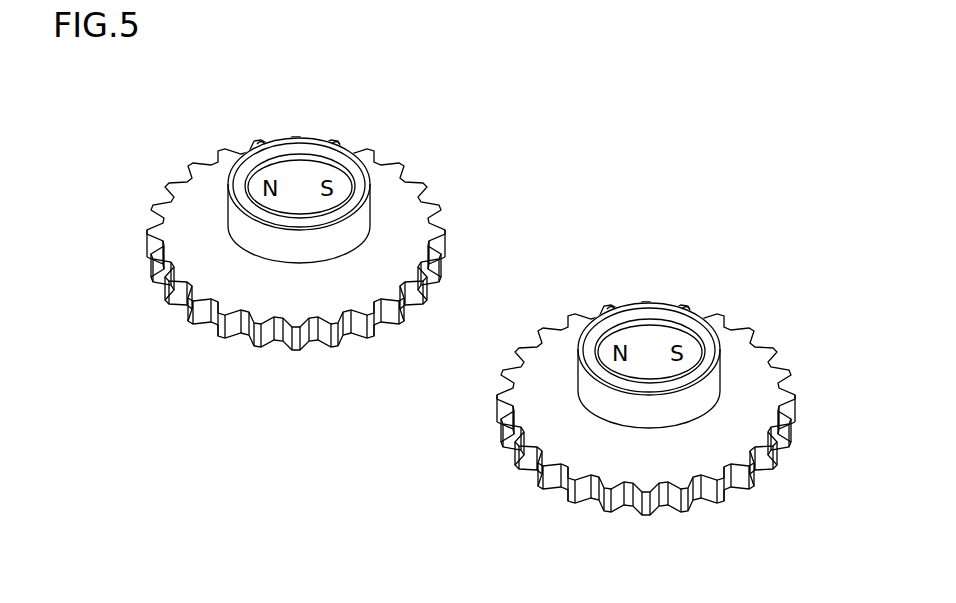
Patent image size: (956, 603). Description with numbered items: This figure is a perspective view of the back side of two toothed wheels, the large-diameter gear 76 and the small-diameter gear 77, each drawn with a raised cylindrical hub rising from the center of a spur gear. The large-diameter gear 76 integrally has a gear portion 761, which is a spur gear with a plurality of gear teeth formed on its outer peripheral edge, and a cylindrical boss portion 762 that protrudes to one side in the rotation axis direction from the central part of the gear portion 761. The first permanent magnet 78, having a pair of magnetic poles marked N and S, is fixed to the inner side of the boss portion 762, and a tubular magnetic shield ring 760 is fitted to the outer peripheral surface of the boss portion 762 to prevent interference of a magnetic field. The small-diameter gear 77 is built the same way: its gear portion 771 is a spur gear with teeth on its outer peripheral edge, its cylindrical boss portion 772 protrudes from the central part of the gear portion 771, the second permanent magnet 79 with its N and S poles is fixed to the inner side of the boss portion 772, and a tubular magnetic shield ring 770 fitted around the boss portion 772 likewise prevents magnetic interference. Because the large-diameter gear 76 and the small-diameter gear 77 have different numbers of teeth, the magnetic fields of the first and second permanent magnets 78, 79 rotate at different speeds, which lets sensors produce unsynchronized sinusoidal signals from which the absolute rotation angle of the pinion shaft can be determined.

The large-diameter gear 76 is at (682, 384).
The magnetic shield ring 760 is at (723, 383).
The gear portion 761 is at (646, 405).
The cylindrical boss portion 762 is at (671, 331).
The first permanent magnet 78 is at (650, 316).
The small-diameter gear 77 is at (333, 220).
The magnetic shield ring 770 is at (363, 228).
The gear portion 771 is at (198, 210).
The cylindrical boss portion 772 is at (341, 156).
The second permanent magnet 79 is at (302, 175).